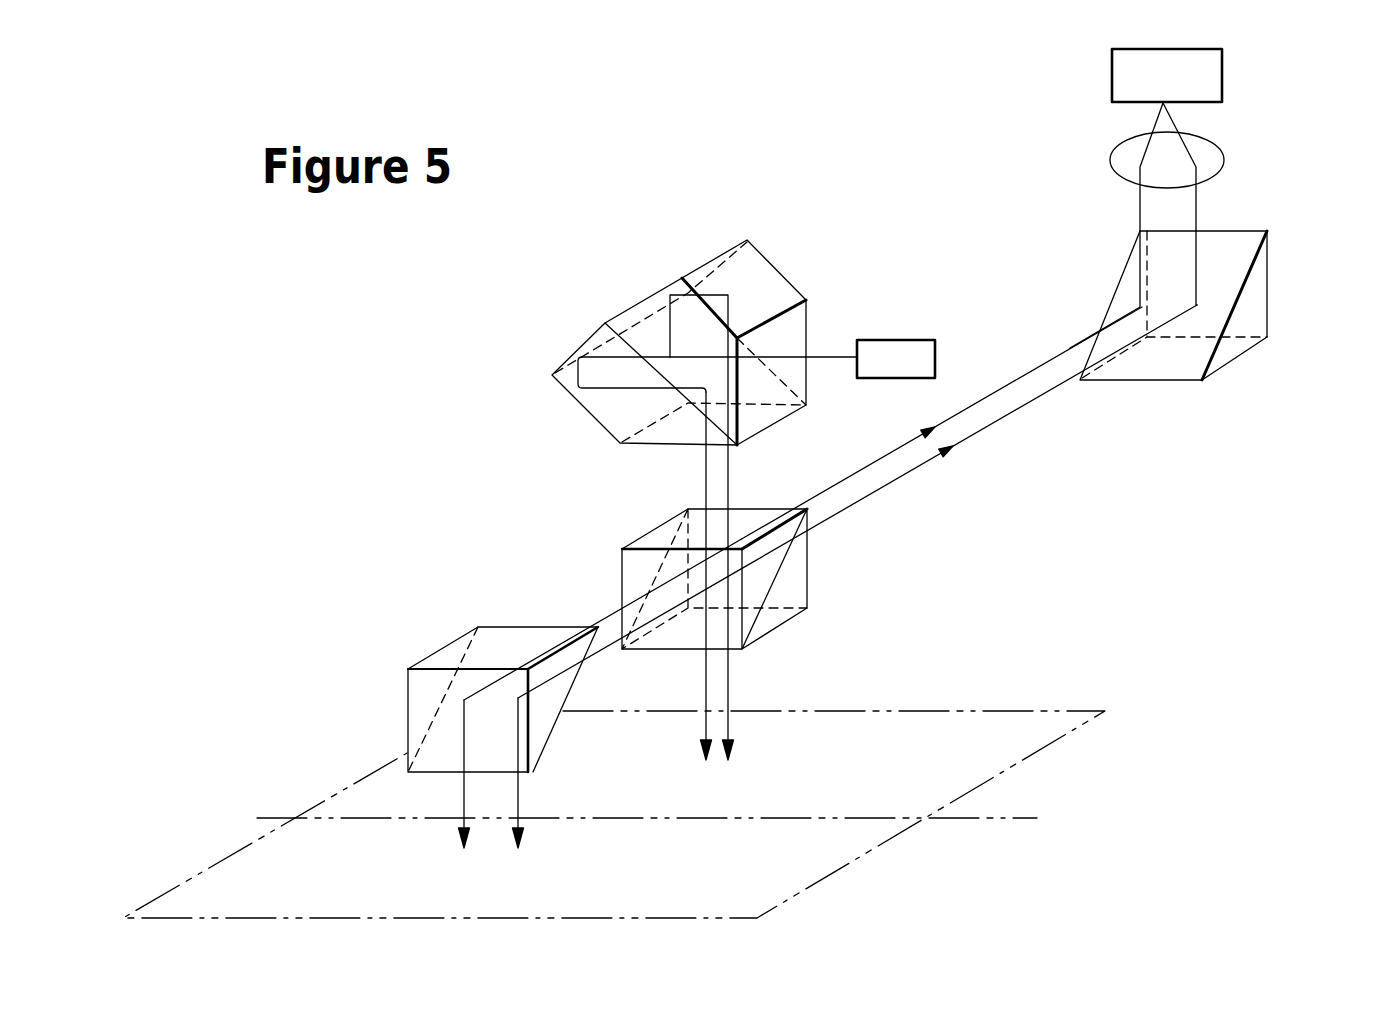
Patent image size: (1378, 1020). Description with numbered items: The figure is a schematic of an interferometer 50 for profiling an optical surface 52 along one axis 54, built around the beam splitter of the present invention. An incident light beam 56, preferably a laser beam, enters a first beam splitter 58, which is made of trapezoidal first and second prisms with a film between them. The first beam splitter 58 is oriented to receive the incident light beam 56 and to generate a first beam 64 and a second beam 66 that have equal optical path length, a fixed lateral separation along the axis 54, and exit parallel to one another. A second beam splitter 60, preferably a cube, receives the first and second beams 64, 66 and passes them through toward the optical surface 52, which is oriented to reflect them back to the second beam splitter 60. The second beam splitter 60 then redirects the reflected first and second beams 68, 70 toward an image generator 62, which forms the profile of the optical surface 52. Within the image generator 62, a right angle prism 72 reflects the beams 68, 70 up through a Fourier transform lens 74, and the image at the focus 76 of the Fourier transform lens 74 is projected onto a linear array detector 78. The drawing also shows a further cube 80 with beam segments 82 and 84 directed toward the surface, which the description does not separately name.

The interferometer 50 is at (1078, 537).
The optical surface 52 is at (943, 711).
The axis 54 is at (997, 820).
The incident light beam 56 is at (890, 340).
The first beam splitter 58 is at (778, 273).
The second beam splitter 60 is at (808, 578).
The image generator 62 is at (1310, 208).
The first beam 64 is at (728, 482).
The second beam 66 is at (703, 480).
The reflected first beam 68 is at (1014, 411).
The reflected second beam 70 is at (871, 467).
The right angle prism 72 is at (1224, 366).
The Fourier transform lens 74 is at (1224, 160).
The focus 76 is at (1160, 104).
The linear array detector 78 is at (1222, 75).
The third beam splitter cube 80 is at (433, 652).
The beam between splitter cubes 82 is at (600, 614).
The beam directed to specimen 84 is at (598, 650).